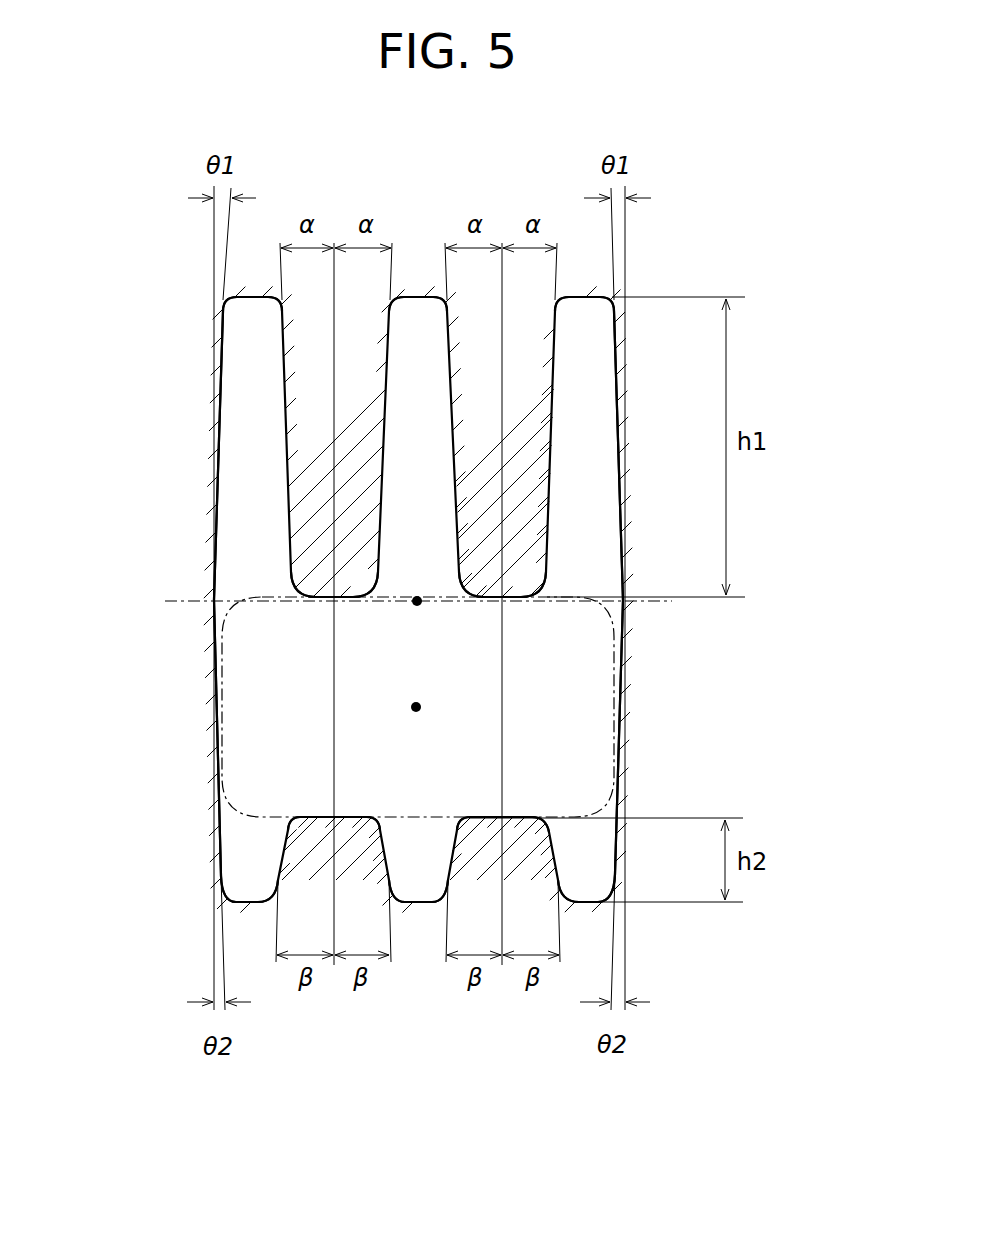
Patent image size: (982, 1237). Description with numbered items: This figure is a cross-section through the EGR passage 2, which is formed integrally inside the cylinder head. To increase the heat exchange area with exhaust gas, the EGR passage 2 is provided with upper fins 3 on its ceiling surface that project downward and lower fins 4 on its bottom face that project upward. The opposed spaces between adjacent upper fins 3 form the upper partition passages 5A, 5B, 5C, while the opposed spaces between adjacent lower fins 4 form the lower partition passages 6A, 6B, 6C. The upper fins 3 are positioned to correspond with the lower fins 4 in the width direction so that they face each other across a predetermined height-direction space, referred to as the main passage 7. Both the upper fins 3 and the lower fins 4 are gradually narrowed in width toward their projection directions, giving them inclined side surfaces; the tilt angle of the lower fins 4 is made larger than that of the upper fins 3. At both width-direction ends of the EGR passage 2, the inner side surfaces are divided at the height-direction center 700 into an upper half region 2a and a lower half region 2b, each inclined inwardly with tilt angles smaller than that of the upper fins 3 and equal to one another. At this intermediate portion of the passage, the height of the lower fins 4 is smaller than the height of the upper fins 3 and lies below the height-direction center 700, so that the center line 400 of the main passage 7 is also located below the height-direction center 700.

The EGR passage 2 is at (210, 520).
The upper half region 2a is at (232, 406).
The lower half region 2b is at (228, 782).
The upper fins 3 is at (348, 548).
The lower fins 4 is at (362, 850).
The upper partition passage 5A is at (249, 322).
The upper partition passage 5B is at (420, 317).
The upper partition passage 5C is at (586, 322).
The lower partition passage 6A is at (248, 875).
The lower partition passage 6B is at (415, 875).
The lower partition passage 6C is at (585, 875).
The main passage 7 is at (630, 636).
The center line 400 is at (418, 710).
The height-direction center 700 is at (419, 606).